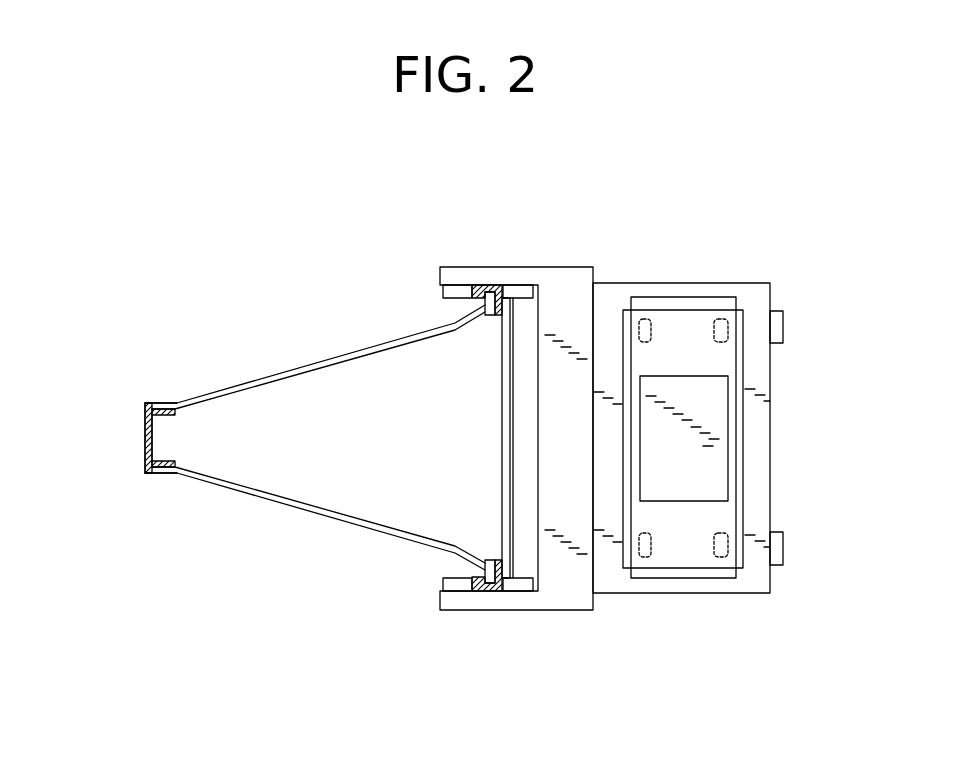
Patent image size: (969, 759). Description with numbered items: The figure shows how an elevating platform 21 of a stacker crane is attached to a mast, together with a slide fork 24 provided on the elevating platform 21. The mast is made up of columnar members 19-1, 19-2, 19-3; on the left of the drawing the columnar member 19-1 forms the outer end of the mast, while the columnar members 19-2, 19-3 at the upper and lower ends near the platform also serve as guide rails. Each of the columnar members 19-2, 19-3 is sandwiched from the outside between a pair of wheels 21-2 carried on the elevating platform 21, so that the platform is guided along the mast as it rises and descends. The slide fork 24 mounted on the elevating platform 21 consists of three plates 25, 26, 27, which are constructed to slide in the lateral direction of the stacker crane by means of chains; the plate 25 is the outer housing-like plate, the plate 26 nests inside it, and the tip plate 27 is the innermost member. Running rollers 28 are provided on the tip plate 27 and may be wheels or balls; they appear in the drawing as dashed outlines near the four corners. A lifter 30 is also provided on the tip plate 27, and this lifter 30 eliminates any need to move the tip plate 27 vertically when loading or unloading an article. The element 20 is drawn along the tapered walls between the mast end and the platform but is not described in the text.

The columnar member 19-1 is at (145, 432).
The columnar member 19-2 is at (456, 306).
The columnar member 19-3 is at (480, 580).
The hood wall / transparent plate 20 is at (316, 372).
The elevating platform 21 is at (580, 618).
The wheels 21-2 is at (462, 290).
The slide fork 24 is at (679, 300).
The plate 25 is at (753, 580).
The plate 26 is at (745, 495).
The tip plate 27 is at (720, 359).
The running rollers 28 is at (644, 318).
The lifter 30 is at (700, 425).